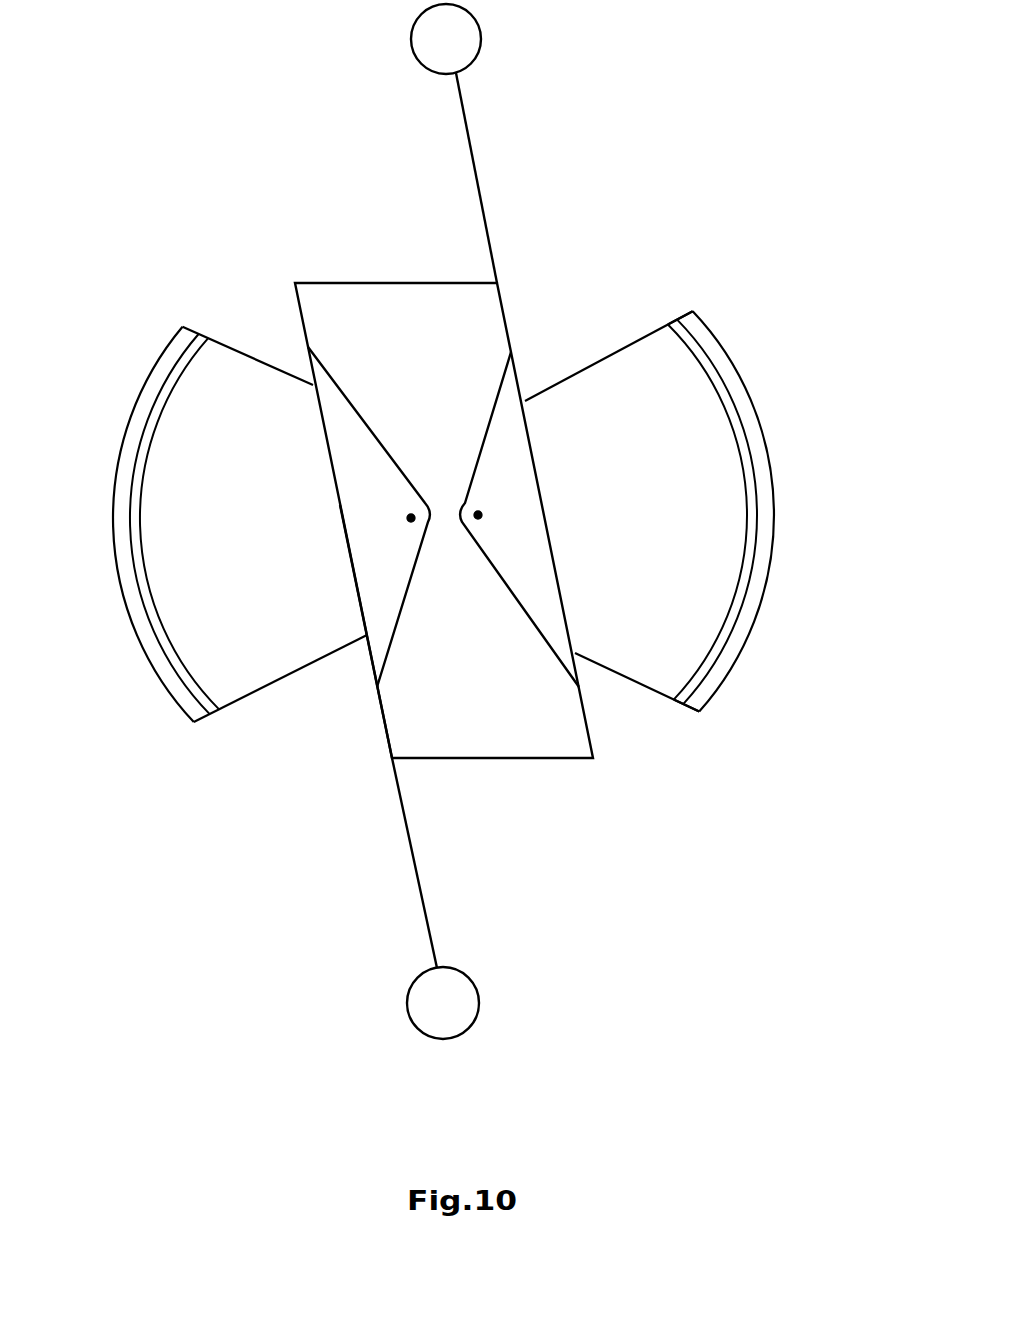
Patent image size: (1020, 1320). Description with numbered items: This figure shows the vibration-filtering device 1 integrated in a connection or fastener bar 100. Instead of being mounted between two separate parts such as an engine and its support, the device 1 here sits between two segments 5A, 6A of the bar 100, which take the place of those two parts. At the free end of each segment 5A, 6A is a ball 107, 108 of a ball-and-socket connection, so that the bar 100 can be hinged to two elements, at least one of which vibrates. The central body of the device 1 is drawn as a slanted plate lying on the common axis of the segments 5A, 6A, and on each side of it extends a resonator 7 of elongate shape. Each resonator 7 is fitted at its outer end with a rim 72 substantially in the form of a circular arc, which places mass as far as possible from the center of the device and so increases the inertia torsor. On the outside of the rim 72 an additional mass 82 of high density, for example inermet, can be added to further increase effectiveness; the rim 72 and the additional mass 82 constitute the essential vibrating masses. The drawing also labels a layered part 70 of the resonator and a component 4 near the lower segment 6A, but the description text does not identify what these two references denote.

The device 1 is at (572, 592).
The shaft 4 is at (380, 727).
The segment of the bar 5A is at (483, 205).
The segment of the bar 6A is at (420, 897).
The resonator 7 is at (651, 534).
The panel layer 70 is at (685, 667).
The rim 72 is at (672, 322).
The additional mass 82 is at (708, 320).
The connection or fastener bar 100 is at (458, 147).
The ball 107 is at (482, 28).
The ball 108 is at (480, 990).